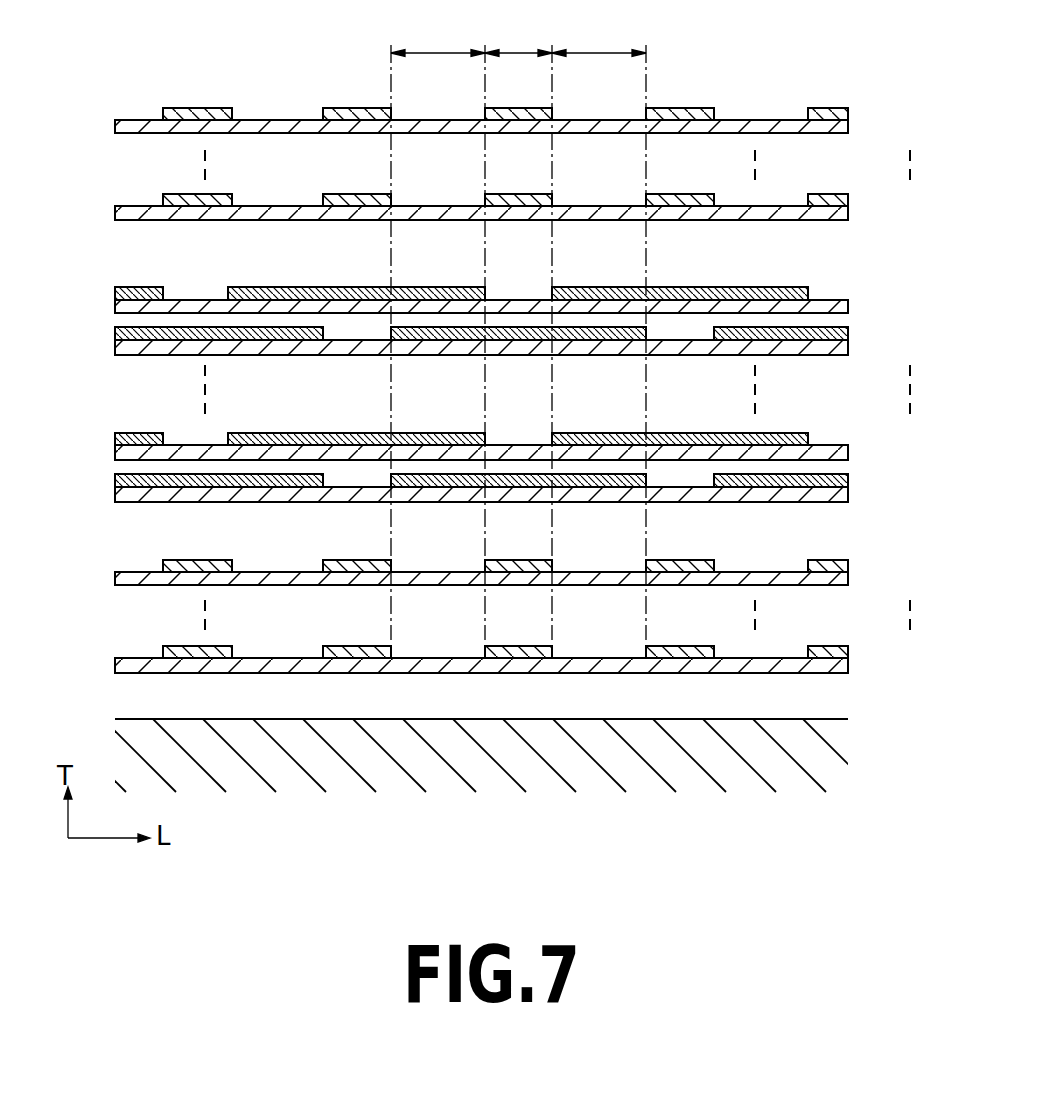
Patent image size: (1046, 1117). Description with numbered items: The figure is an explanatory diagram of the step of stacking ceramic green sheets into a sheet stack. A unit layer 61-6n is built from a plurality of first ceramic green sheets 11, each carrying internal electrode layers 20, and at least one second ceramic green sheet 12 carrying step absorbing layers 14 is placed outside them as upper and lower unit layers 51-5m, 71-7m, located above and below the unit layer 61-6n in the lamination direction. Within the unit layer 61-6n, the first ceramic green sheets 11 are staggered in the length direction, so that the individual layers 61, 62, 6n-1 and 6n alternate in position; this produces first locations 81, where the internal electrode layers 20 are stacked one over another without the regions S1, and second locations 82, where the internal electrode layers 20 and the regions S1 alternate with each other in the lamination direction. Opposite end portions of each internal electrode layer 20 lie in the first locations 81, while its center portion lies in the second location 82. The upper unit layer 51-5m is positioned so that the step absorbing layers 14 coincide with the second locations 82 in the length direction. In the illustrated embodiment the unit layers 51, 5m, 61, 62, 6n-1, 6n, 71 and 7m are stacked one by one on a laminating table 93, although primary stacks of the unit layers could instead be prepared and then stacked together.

The first ceramic green sheet 11 is at (122, 307).
The second ceramic green sheet 12 is at (122, 127).
The step absorbing layer 14 is at (358, 118).
The internal electrode layer 20 is at (351, 296).
The region S1 is at (514, 280).
The upper unit layer 51 is at (492, 332).
The upper unit layer 5m is at (870, 209).
The unit layer 61 is at (492, 319).
The unit layer 62 is at (870, 344).
The unit layer 6n-1 is at (870, 449).
The unit layer 6n is at (870, 488).
The lower unit layer 71 is at (870, 573).
The lower unit layer 7m is at (870, 664).
The first location 81 is at (440, 53).
The second location 82 is at (518, 53).
The laminating table 93 is at (343, 785).